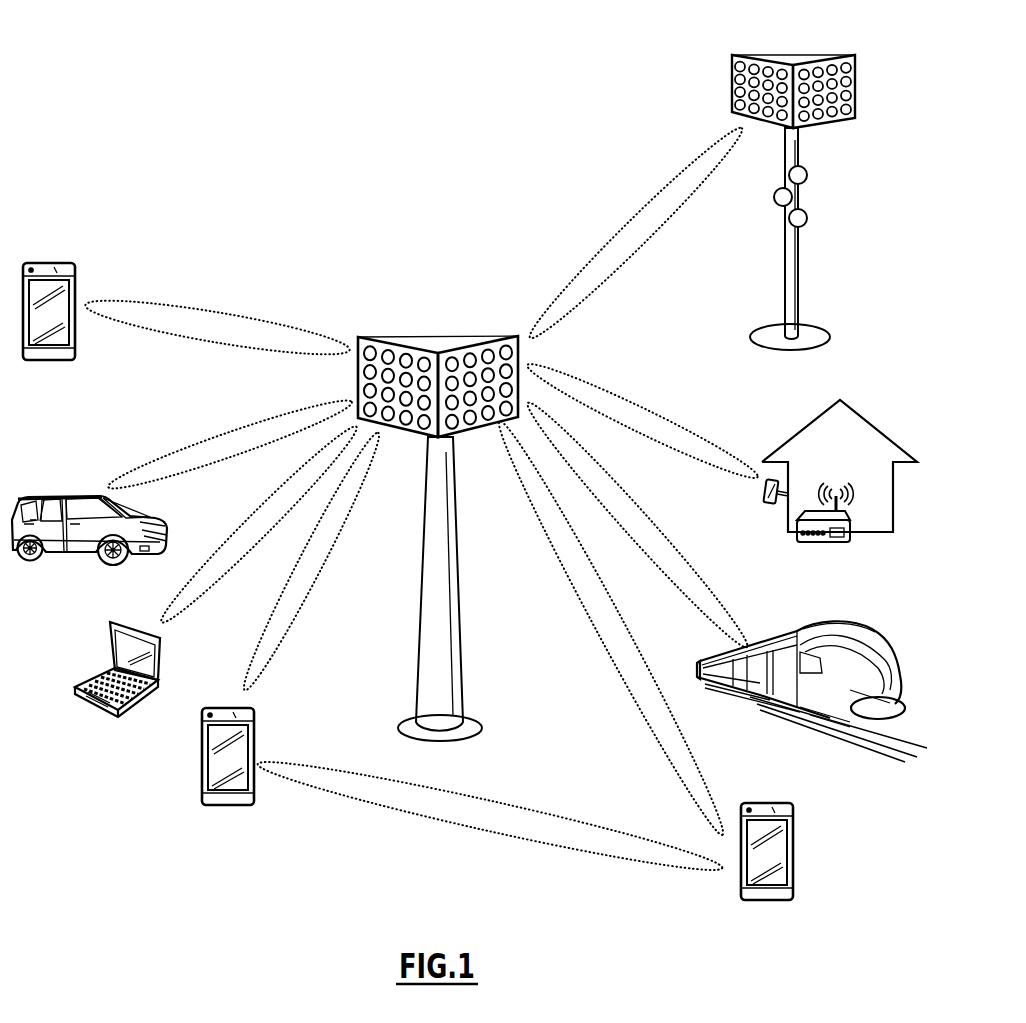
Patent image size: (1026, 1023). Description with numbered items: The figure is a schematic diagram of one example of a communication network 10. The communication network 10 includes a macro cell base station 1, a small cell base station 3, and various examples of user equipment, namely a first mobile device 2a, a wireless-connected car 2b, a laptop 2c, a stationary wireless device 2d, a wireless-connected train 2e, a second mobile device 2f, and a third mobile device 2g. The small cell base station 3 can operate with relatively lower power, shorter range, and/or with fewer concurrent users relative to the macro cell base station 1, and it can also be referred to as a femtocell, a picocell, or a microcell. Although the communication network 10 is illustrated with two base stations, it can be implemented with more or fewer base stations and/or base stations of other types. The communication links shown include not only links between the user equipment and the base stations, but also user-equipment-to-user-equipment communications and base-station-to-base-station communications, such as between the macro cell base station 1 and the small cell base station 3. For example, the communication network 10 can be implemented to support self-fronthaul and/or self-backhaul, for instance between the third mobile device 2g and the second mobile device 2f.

The communication network 10 is at (113, 162).
The macro cell base station 1 is at (417, 690).
The small cell base station 3 is at (788, 313).
The first mobile device 2a is at (76, 283).
The wireless-connected car 2b is at (63, 548).
The laptop 2c is at (110, 644).
The stationary wireless device 2d is at (771, 503).
The wireless-connected train 2e is at (870, 643).
The second mobile device 2f is at (793, 838).
The third mobile device 2g is at (254, 731).